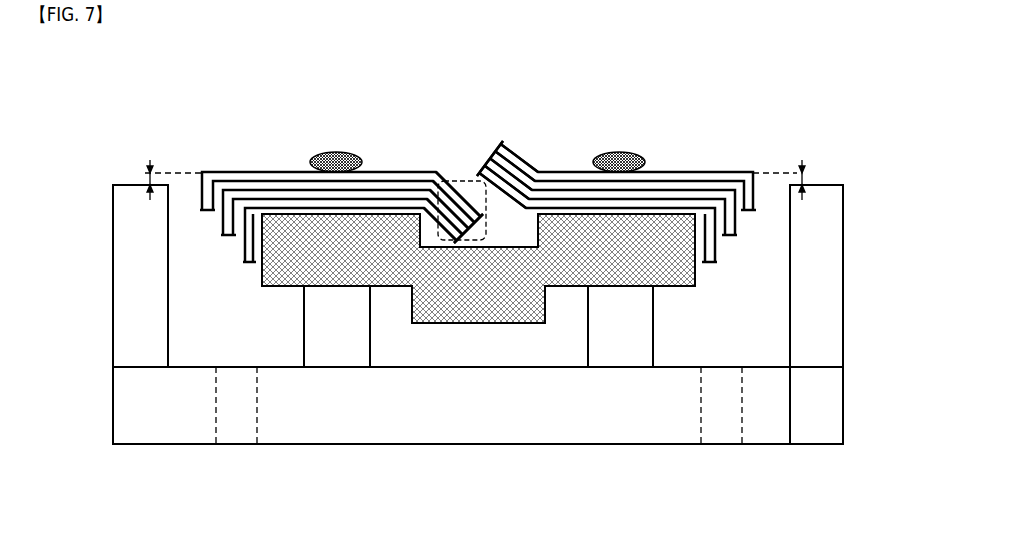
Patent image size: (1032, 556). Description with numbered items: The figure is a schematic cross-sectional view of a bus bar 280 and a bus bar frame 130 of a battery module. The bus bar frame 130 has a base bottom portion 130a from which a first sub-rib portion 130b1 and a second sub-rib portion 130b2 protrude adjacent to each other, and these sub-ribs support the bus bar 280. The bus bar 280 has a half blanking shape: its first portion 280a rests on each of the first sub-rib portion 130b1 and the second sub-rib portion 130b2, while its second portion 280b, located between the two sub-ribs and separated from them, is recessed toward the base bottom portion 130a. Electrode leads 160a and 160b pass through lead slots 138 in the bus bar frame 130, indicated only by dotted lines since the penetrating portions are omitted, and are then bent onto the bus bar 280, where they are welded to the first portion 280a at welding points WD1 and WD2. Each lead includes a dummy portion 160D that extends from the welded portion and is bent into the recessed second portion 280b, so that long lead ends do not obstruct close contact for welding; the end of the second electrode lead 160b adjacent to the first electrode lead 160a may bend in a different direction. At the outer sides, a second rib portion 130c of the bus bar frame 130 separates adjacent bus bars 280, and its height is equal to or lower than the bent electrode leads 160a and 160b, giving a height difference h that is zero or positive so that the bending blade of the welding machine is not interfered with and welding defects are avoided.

The bus bar frame 130 is at (853, 185).
The base bottom portion 130a is at (540, 420).
The first sub-rib portion 130b1 is at (318, 320).
The second sub-rib portion 130b2 is at (640, 320).
The second rib portion 130c is at (830, 252).
The lead slot 138 is at (238, 408).
The dummy portion 160D is at (465, 178).
The first electrode lead 160a is at (262, 178).
The second electrode lead 160b is at (702, 176).
The bus bar 280 is at (567, 78).
The first portion 280a is at (367, 237).
The second portion 280b is at (482, 303).
The welding point WD1 is at (337, 153).
The welding point WD2 is at (618, 153).
The height difference h is at (147, 180).